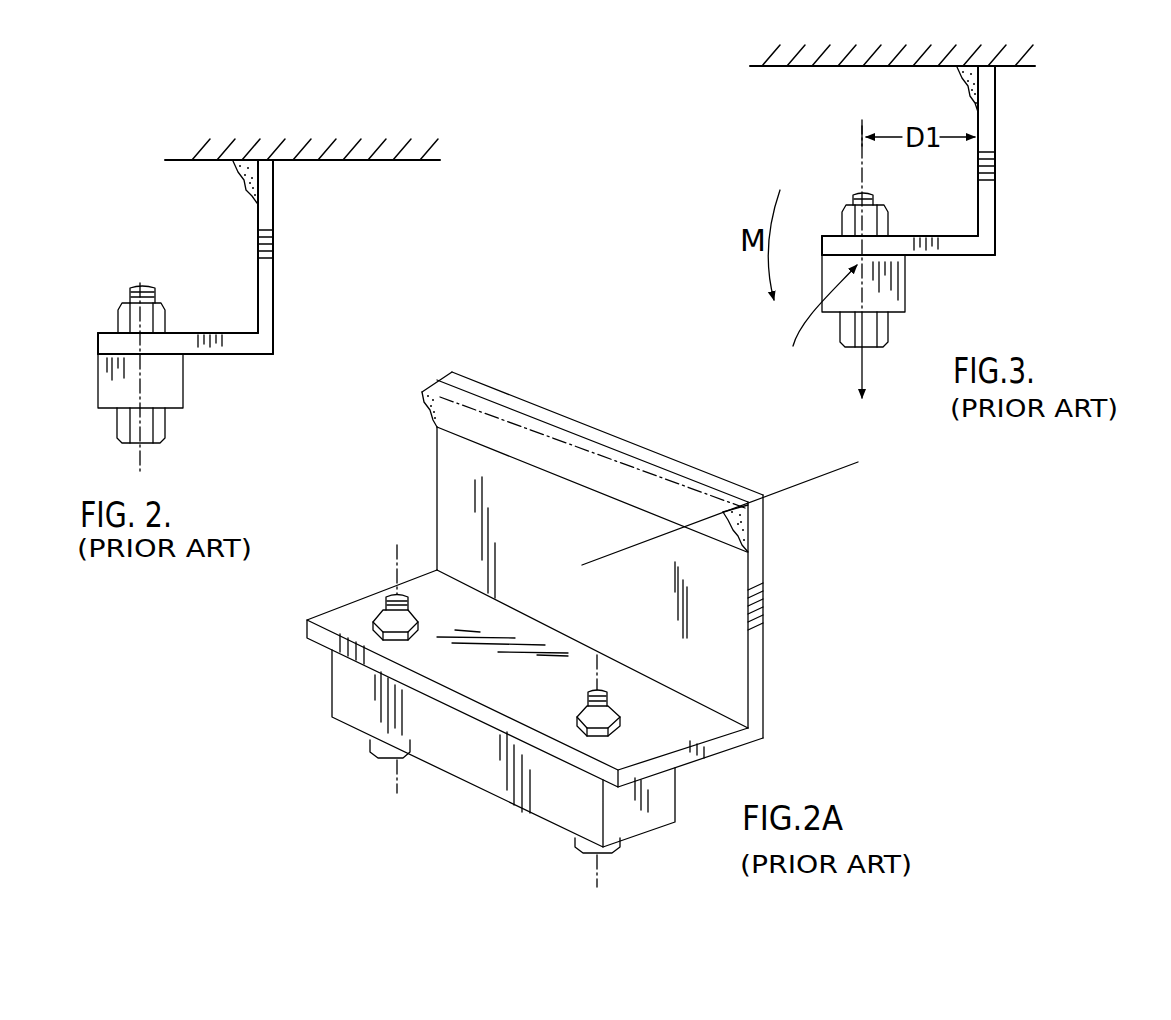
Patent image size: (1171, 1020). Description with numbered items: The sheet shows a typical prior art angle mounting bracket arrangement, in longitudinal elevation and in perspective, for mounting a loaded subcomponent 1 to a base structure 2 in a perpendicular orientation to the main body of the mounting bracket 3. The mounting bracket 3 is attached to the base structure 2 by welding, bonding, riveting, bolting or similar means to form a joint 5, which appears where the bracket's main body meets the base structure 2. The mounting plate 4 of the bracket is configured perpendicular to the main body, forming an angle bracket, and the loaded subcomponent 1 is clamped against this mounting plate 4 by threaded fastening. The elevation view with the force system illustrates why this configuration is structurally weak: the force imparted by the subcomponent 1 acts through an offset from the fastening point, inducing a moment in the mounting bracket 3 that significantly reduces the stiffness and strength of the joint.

In FIG. 2, the loaded subcomponent 1 is at (96, 382).
In FIG. 3, the loaded subcomponent 1 is at (846, 259).
In FIG. 2A, the loaded subcomponent 1 is at (476, 799).
In FIG. 2, the base structure 2 is at (396, 136).
In FIG. 2, the mounting bracket 3 is at (287, 240).
In FIG. 3, the mounting bracket 3 is at (908, 160).
In FIG. 2A, the mounting bracket 3 is at (770, 612).
In FIG. 2, the mounting plate 4 is at (206, 366).
In FIG. 3, the mounting plate 4 is at (946, 259).
In FIG. 2A, the mounting plate 4 is at (704, 774).
In FIG. 2, the joint 5 is at (234, 179).
In FIG. 3, the joint 5 is at (952, 85).
In FIG. 2A, the joint 5 is at (420, 410).